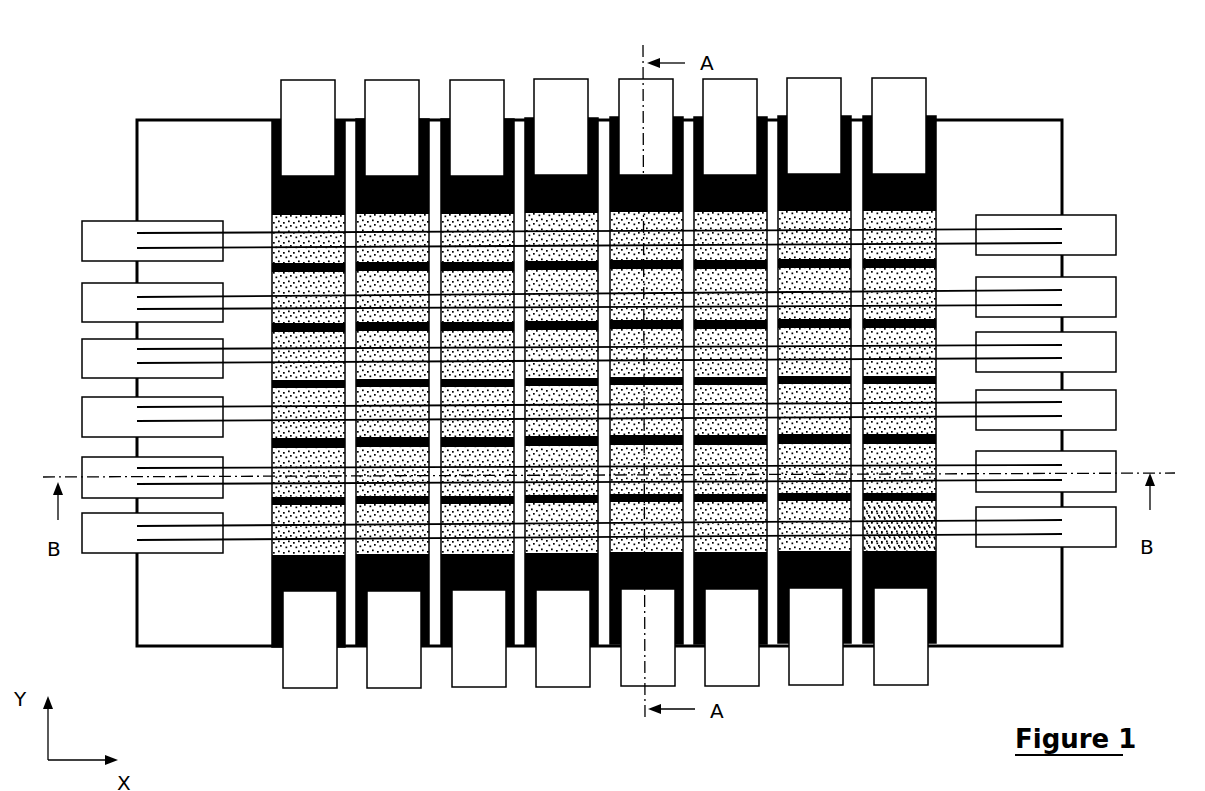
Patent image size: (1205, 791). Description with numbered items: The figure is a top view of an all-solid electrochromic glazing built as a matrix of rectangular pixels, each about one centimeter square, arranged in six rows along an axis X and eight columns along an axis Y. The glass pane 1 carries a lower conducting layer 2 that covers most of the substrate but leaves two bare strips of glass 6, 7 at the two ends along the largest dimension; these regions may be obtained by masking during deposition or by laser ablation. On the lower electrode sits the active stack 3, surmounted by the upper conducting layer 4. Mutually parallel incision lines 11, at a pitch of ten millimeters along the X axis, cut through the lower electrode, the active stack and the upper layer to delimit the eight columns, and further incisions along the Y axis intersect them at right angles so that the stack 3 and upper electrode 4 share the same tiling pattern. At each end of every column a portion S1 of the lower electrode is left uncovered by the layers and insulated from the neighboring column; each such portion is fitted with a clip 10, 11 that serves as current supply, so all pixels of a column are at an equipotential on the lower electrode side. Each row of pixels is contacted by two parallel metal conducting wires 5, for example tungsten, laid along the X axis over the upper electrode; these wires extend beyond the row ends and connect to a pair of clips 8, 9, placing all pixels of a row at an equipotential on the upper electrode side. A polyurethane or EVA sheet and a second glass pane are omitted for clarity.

The glass pane 1 is at (773, 135).
The lower conducting layer 2 is at (938, 575).
The active stack 3 is at (928, 544).
The upper conducting layer 4 is at (942, 544).
The conducting wires 5 is at (243, 540).
The bare strip of glass 6 is at (1023, 625).
The bare strip of glass 7 is at (187, 633).
The clip 8 is at (98, 540).
The clip 9 is at (1092, 535).
The clip 10 is at (308, 93).
The incision lines 11 is at (308, 667).
The portion of lower electrode S1 is at (272, 181).